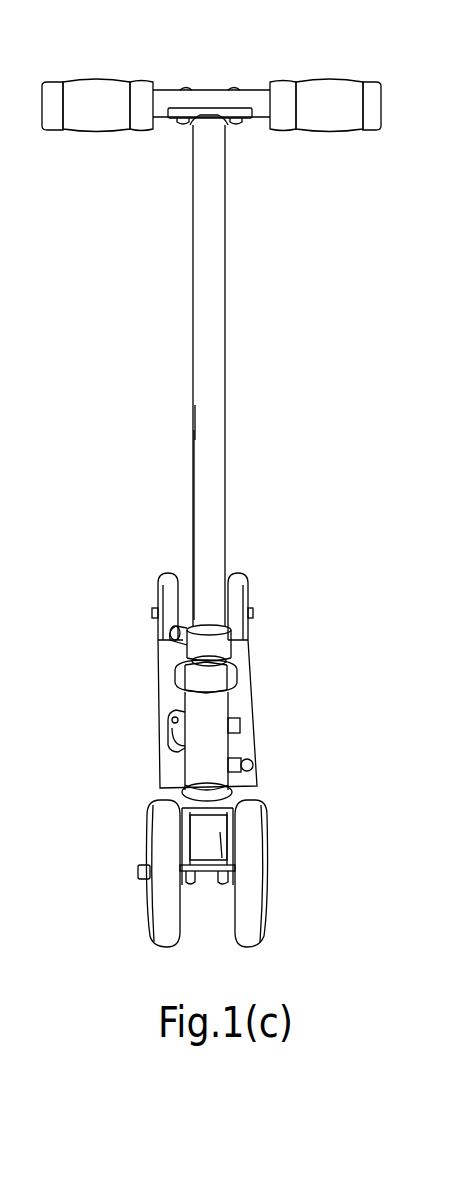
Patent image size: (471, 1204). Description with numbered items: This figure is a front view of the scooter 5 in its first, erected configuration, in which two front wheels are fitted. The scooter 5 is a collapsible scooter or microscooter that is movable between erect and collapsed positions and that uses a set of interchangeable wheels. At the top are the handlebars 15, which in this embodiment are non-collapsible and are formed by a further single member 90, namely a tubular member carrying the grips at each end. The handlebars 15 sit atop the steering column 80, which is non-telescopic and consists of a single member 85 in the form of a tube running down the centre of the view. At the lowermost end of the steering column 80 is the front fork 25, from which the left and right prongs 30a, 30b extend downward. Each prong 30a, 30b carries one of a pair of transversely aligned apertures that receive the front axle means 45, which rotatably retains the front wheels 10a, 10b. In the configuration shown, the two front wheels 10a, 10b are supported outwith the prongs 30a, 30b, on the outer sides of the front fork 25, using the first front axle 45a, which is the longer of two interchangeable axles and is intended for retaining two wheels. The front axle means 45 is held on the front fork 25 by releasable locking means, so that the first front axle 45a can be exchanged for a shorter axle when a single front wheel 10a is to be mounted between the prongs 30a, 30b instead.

The scooter 5 is at (262, 428).
The front wheel 10a is at (253, 917).
The front wheel 10b is at (167, 920).
The handlebars 15 is at (200, 92).
The front fork 25 is at (223, 810).
The left prong 30a is at (223, 840).
The right prong 30b is at (187, 840).
The front axle means 45 is at (208, 877).
The first front axle 45a is at (223, 877).
The steering column 80 is at (225, 510).
The single member 85 is at (213, 482).
The further single member 90 is at (327, 85).